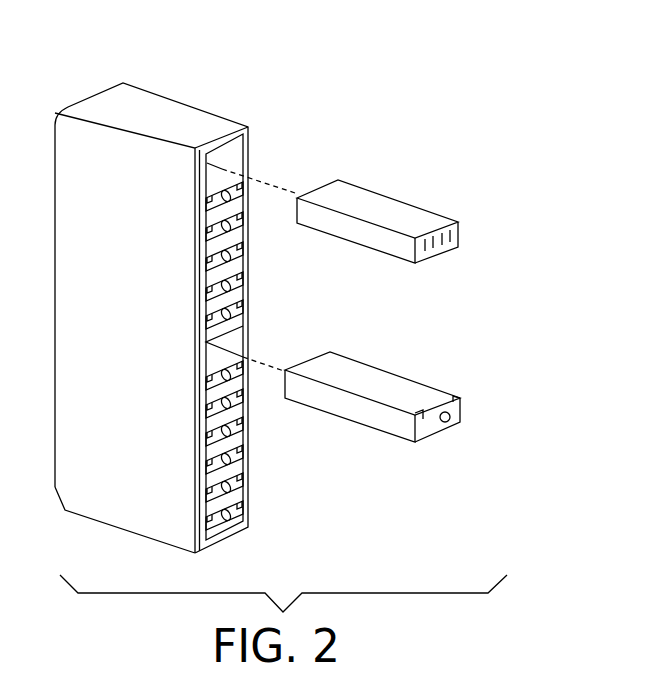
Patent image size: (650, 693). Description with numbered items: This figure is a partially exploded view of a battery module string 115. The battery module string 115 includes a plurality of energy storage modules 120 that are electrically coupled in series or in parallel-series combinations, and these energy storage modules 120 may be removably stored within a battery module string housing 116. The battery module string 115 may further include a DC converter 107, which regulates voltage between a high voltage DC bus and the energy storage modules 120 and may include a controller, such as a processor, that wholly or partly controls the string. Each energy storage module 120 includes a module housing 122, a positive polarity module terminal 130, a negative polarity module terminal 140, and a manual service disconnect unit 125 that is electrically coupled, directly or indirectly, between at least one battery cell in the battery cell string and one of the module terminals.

The battery module string 115 is at (198, 83).
The battery module string housing 116 is at (155, 545).
The DC converter 107 is at (407, 205).
The energy storage module 120 is at (441, 417).
The module housing 122 is at (433, 392).
The manual service disconnect unit 125 is at (448, 419).
The positive polarity module terminal 130 is at (415, 420).
The negative polarity module terminal 140 is at (460, 400).